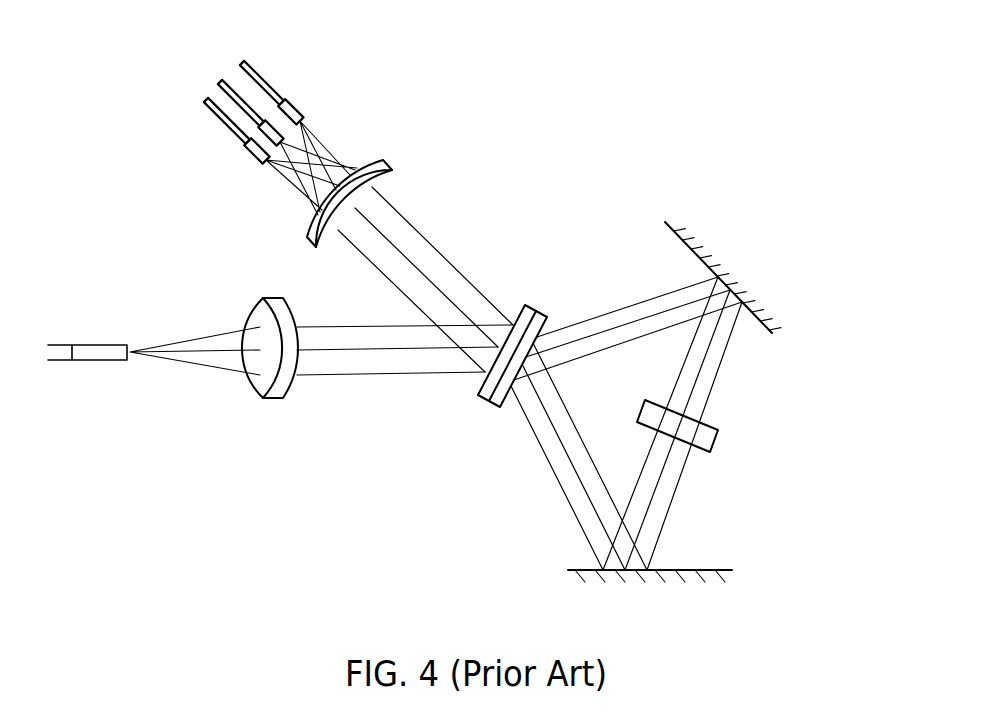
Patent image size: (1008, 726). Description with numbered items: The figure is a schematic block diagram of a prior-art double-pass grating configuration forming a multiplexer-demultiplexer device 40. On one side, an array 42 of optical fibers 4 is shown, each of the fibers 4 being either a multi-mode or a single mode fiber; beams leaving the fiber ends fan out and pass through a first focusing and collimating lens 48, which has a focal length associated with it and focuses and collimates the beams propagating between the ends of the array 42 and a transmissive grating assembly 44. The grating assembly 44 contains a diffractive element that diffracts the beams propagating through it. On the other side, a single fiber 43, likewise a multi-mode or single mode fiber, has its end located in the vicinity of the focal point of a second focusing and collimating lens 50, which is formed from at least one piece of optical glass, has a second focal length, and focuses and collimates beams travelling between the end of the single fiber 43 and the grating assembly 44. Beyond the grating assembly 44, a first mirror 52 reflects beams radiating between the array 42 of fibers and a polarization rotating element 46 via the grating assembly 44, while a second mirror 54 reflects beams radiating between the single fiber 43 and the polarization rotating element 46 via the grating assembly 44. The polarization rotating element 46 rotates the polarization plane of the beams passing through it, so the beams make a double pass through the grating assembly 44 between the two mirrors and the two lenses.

The multiplexer-demultiplexer device 40 is at (633, 120).
The array of optical fibers 42 is at (283, 93).
The optical fiber 4 is at (227, 117).
The first focusing and collimating lens 48 is at (390, 167).
The single fiber 43 is at (73, 361).
The second focusing and collimating lens 50 is at (263, 400).
The transmissive grating assembly 44 is at (533, 303).
The first mirror 52 is at (753, 262).
The polarization rotating element 46 is at (720, 438).
The second mirror 54 is at (745, 573).